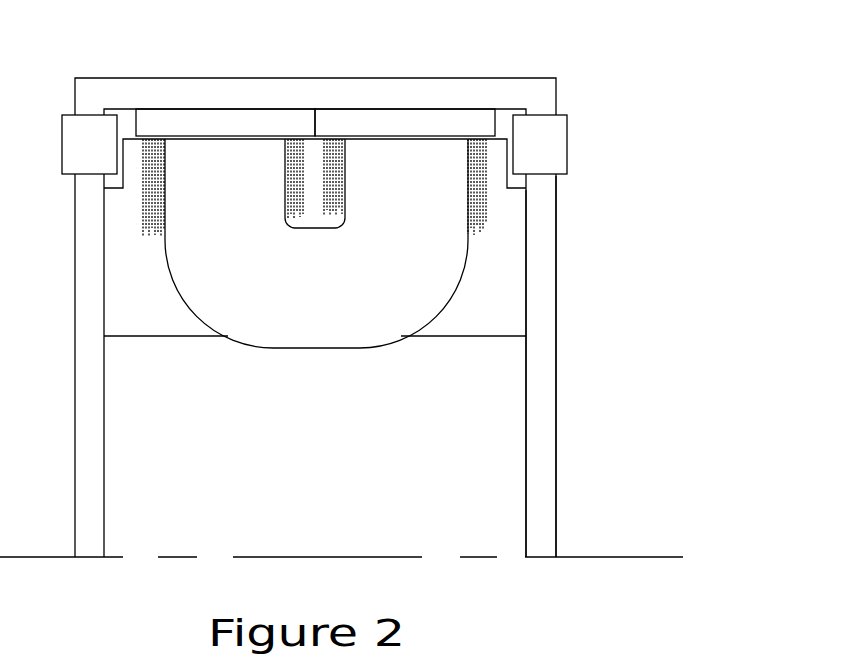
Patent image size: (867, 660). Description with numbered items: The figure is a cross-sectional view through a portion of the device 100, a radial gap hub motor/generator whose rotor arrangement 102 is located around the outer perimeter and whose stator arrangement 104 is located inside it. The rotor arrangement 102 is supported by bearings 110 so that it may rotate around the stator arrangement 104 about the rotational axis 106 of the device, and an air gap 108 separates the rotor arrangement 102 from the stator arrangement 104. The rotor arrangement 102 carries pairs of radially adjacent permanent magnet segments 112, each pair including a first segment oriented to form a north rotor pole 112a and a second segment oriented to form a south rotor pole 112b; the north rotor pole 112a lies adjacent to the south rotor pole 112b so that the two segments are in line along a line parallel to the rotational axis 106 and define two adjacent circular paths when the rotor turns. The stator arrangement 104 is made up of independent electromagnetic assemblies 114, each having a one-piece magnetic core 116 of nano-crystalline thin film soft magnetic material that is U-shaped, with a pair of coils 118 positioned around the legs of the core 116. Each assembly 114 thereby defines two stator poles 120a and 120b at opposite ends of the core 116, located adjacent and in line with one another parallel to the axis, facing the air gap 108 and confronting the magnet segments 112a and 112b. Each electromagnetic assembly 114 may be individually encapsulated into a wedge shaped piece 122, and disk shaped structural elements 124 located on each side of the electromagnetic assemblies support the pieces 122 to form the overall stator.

The device 100 is at (613, 87).
The rotor arrangement 102 is at (323, 78).
The stator arrangement 104 is at (482, 335).
The rotational axis 106 is at (593, 557).
The air gap 108 is at (272, 138).
The bearings 110 is at (555, 158).
The permanent magnet segment pair 112 is at (374, 71).
The north rotor pole 112a is at (189, 122).
The south rotor pole 112b is at (447, 118).
The electromagnetic assembly 114 is at (323, 293).
The one-piece magnetic core 116 is at (373, 310).
The coils 118 is at (155, 178).
The first stator pole 120a is at (213, 142).
The second stator pole 120b is at (397, 142).
The wedge shaped piece 122 is at (155, 320).
The disk shaped structural element 124 is at (543, 325).